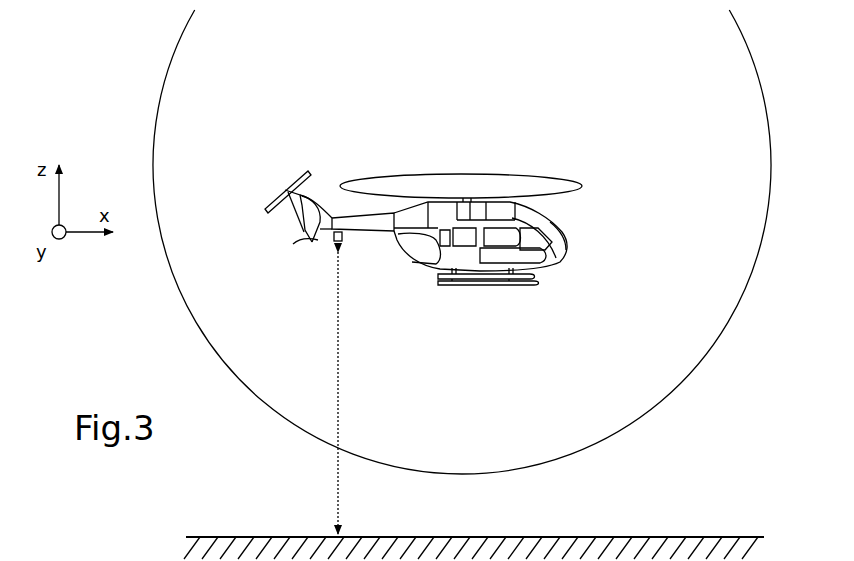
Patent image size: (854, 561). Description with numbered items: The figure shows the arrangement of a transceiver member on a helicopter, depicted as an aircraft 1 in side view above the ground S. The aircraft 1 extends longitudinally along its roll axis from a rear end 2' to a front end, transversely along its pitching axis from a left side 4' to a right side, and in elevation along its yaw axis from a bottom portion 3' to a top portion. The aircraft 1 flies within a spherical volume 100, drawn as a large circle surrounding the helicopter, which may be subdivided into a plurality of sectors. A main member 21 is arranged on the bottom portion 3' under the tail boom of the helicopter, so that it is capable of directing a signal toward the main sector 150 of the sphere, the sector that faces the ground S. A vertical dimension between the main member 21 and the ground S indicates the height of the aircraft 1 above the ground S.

The aircraft 1 is at (466, 328).
The left side 4' is at (461, 145).
The rear end 2' is at (273, 235).
The main member 21 is at (335, 247).
The bottom portion 3' is at (488, 327).
The main sector 150 is at (612, 383).
The spherical volume 100 is at (716, 342).
The ground S is at (681, 536).